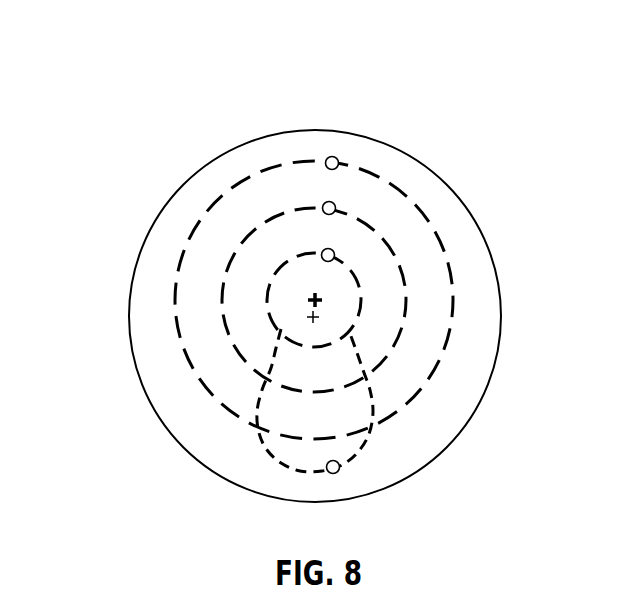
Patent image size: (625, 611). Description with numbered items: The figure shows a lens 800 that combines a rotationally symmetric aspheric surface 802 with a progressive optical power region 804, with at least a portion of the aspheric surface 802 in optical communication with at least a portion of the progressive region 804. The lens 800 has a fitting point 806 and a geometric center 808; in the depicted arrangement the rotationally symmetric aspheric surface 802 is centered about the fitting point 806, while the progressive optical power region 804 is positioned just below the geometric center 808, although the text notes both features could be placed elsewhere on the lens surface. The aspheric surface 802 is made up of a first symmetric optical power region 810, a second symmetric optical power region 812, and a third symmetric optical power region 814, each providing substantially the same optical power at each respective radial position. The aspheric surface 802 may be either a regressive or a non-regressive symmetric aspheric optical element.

The lens 800 is at (105, 120).
The rotationally symmetric aspheric surface 802 is at (458, 223).
The progressive optical power region 804 is at (339, 470).
The fitting point 806 is at (325, 295).
The geometric center 808 is at (323, 318).
The first symmetric optical power region 810 is at (334, 251).
The second symmetric optical power region 812 is at (335, 204).
The third symmetric optical power region 814 is at (338, 158).